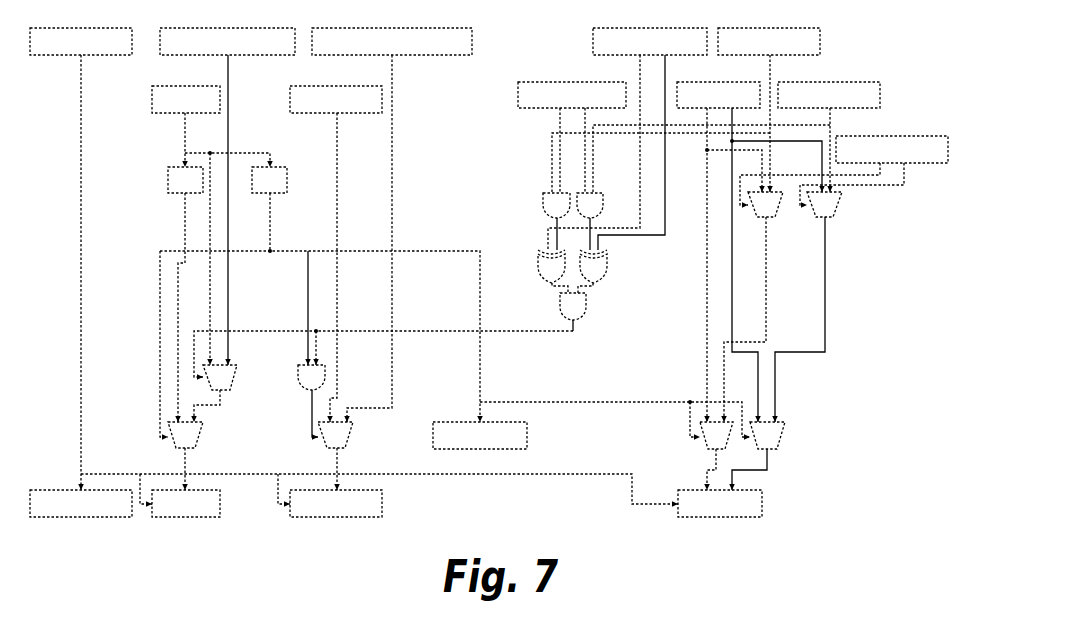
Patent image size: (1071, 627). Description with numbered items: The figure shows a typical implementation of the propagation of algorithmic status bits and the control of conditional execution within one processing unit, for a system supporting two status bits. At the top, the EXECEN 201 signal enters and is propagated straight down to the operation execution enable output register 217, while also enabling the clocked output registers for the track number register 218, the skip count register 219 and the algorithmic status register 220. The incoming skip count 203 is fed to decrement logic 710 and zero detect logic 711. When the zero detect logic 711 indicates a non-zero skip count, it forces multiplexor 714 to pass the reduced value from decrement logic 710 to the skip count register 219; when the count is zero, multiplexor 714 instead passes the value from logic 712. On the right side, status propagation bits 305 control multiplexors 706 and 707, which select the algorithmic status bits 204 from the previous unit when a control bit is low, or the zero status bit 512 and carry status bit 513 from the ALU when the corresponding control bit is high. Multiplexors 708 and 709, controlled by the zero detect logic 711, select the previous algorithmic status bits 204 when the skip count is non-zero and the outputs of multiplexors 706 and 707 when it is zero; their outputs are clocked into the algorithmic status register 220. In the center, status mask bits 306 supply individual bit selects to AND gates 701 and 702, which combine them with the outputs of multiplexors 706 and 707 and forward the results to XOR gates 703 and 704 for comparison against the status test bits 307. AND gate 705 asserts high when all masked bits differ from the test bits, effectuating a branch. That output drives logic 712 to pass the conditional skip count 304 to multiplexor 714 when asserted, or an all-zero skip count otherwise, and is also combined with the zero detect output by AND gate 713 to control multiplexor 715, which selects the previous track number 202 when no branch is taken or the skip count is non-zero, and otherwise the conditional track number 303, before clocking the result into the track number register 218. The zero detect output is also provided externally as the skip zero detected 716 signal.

The EXECEN signal 201 is at (129, 28).
The conditional skip count 304 is at (292, 28).
The conditional track number 303 is at (469, 28).
The status test bits 307 is at (703, 28).
The carry status bit 513 is at (816, 28).
The skip count 203 is at (216, 86).
The track number 202 is at (378, 86).
The status mask bits 306 is at (622, 82).
The algorithmic status bits 204 is at (757, 82).
The zero status bit 512 is at (876, 82).
The status propagation bits 305 is at (944, 136).
The decrement logic 710 is at (168, 187).
The zero detect logic 711 is at (287, 187).
The AND gate 701 is at (543, 190).
The AND gate 702 is at (603, 190).
The XOR gate 703 is at (538, 261).
The XOR gate 704 is at (607, 261).
The AND gate 705 is at (586, 297).
The multiplexor 706 is at (781, 208).
The multiplexor 707 is at (840, 208).
The multiplexor 708 is at (710, 449).
The multiplexor 709 is at (783, 435).
The logic 712 is at (236, 380).
The AND gate 713 is at (298, 365).
The multiplexor 714 is at (202, 428).
The multiplexor 715 is at (352, 428).
The skip zero detected signal 716 is at (519, 449).
The operation execution enable output register 217 is at (128, 517).
The skip count register 219 is at (215, 517).
The track number register 218 is at (378, 517).
The algorithmic status register 220 is at (758, 517).